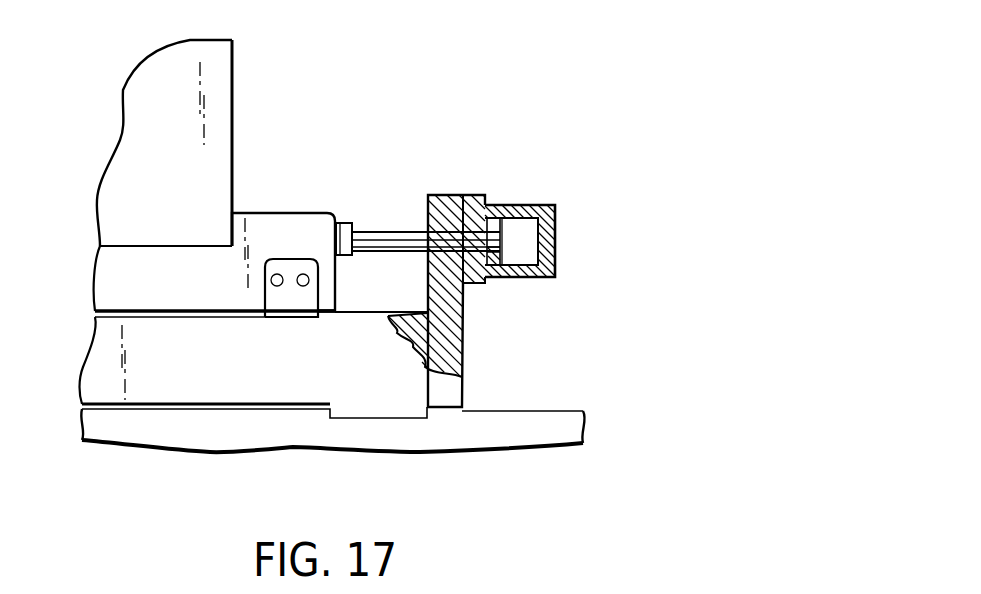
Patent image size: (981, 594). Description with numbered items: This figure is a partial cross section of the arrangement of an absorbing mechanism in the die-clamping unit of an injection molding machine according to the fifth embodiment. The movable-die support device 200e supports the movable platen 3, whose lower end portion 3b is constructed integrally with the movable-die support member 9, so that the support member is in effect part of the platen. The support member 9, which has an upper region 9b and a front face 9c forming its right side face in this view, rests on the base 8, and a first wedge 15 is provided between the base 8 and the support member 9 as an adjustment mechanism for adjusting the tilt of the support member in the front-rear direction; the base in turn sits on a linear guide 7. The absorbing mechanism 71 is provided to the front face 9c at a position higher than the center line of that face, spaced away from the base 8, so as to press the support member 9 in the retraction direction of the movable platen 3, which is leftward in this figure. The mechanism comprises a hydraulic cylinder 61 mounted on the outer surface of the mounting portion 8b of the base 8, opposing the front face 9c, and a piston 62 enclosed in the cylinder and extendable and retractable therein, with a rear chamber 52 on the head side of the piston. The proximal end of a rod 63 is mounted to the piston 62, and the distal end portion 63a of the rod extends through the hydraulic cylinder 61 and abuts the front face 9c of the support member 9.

The movable platen 3 is at (140, 130).
The lower end portion of the movable platen 3b is at (107, 232).
The movable-die support member 9 is at (107, 277).
The raised portion of supporting base 9b is at (285, 212).
The front face of the movable-die support member 9c is at (338, 287).
The first wedge 15 is at (292, 300).
The distal end portion of the rod 63a is at (341, 232).
The rod 63 is at (392, 237).
The mounting portion of the base 8b is at (443, 200).
The base 8 is at (453, 365).
The hydraulic cylinder 61 is at (517, 208).
The piston 62 is at (493, 278).
The rear chamber 52 is at (520, 240).
The linear guide 7 is at (557, 410).
The absorbing mechanism 71 is at (522, 133).
The movable-die support device 200e is at (642, 70).